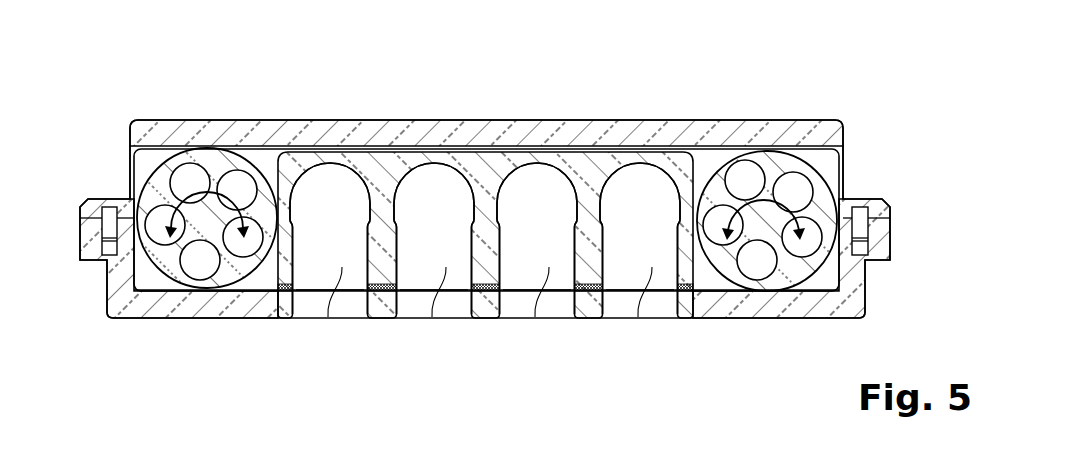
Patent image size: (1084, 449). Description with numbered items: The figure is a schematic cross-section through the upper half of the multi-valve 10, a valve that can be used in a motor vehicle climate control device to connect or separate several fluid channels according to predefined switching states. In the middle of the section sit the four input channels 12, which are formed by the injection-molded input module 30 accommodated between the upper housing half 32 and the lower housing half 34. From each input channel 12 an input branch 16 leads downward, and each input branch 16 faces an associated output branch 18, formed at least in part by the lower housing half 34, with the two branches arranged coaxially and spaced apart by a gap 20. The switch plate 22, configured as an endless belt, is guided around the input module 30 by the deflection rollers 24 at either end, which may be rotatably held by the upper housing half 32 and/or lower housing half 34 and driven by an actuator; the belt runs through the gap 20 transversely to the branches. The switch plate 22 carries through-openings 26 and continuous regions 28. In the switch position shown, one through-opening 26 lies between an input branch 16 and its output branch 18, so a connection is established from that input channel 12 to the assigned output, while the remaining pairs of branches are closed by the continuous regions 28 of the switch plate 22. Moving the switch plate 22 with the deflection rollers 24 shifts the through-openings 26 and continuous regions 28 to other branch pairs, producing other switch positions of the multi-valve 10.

The multi-valve 10 is at (828, 82).
The input channel 12 is at (317, 217).
The input branch 16 is at (484, 310).
The output branch 18 is at (348, 303).
The gap 20 is at (707, 290).
The switch plate 22 is at (718, 149).
The deflection roller 24 is at (155, 195).
The through-opening 26 is at (522, 290).
The continuous region 28 is at (315, 290).
The input module 30 is at (588, 178).
The upper housing half 32 is at (833, 137).
The lower housing half 34 is at (852, 298).